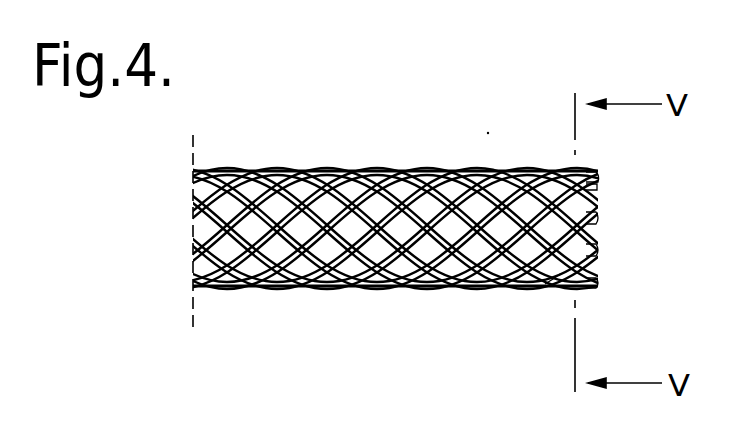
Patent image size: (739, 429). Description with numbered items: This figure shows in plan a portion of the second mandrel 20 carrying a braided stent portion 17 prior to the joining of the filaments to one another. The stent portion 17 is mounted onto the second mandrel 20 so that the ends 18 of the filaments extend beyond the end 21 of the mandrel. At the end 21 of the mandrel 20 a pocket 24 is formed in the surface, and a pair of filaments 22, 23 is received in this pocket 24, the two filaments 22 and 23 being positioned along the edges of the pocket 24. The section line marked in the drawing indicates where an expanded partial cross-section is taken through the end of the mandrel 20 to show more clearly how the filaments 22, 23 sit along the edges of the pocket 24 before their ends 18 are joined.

The stent portion 17 is at (358, 285).
The ends of the filaments 18 is at (596, 178).
The second mandrel 20 is at (555, 280).
The end of the mandrel 21 is at (585, 288).
The filament 22 is at (600, 190).
The filament 23 is at (600, 208).
The pocket 24 is at (600, 182).